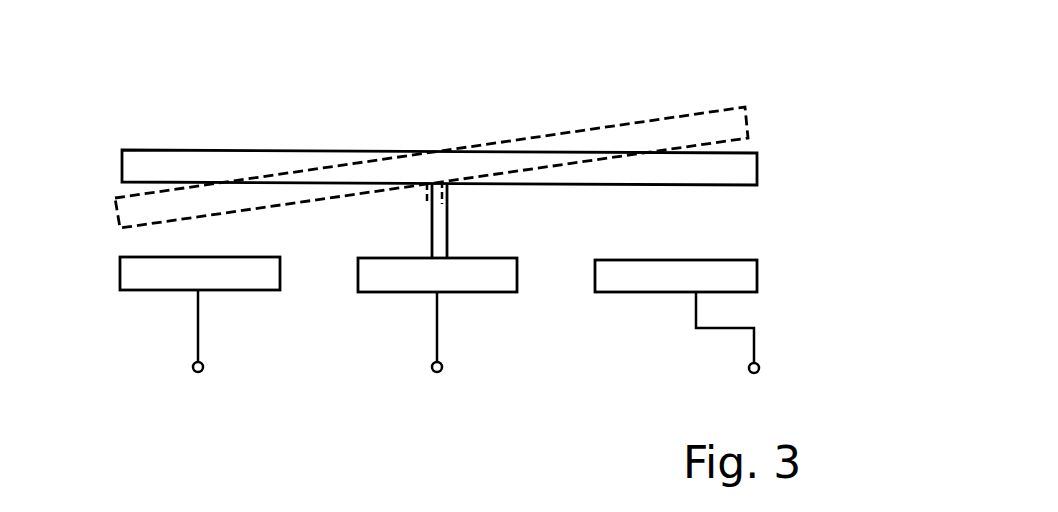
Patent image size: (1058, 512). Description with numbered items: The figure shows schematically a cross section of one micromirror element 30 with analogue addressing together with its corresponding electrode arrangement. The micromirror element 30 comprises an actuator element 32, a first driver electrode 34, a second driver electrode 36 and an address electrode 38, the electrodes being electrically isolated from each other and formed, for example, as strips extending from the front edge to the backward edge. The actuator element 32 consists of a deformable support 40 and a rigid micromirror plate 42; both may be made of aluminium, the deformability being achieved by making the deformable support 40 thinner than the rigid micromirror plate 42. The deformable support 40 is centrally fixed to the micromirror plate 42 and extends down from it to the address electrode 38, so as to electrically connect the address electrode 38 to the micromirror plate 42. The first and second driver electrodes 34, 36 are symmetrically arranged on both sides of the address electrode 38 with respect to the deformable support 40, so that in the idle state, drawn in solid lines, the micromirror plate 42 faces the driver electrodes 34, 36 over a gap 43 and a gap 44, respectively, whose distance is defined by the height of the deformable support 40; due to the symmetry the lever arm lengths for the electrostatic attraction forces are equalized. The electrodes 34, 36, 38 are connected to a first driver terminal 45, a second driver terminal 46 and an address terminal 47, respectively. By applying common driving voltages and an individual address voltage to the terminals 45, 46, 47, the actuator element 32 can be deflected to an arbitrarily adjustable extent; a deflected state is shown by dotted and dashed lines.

The micromirror element 30 is at (727, 43).
The actuator element 32 is at (793, 97).
The first driver electrode 34 is at (120, 268).
The second driver electrode 36 is at (758, 271).
The address electrode 38 is at (518, 272).
The deformable support 40 is at (448, 213).
The rigid micromirror plate 42 is at (160, 150).
The gap 43 is at (172, 239).
The gap 44 is at (678, 226).
The first driver terminal 45 is at (193, 369).
The second driver terminal 46 is at (757, 360).
The address terminal 47 is at (442, 365).